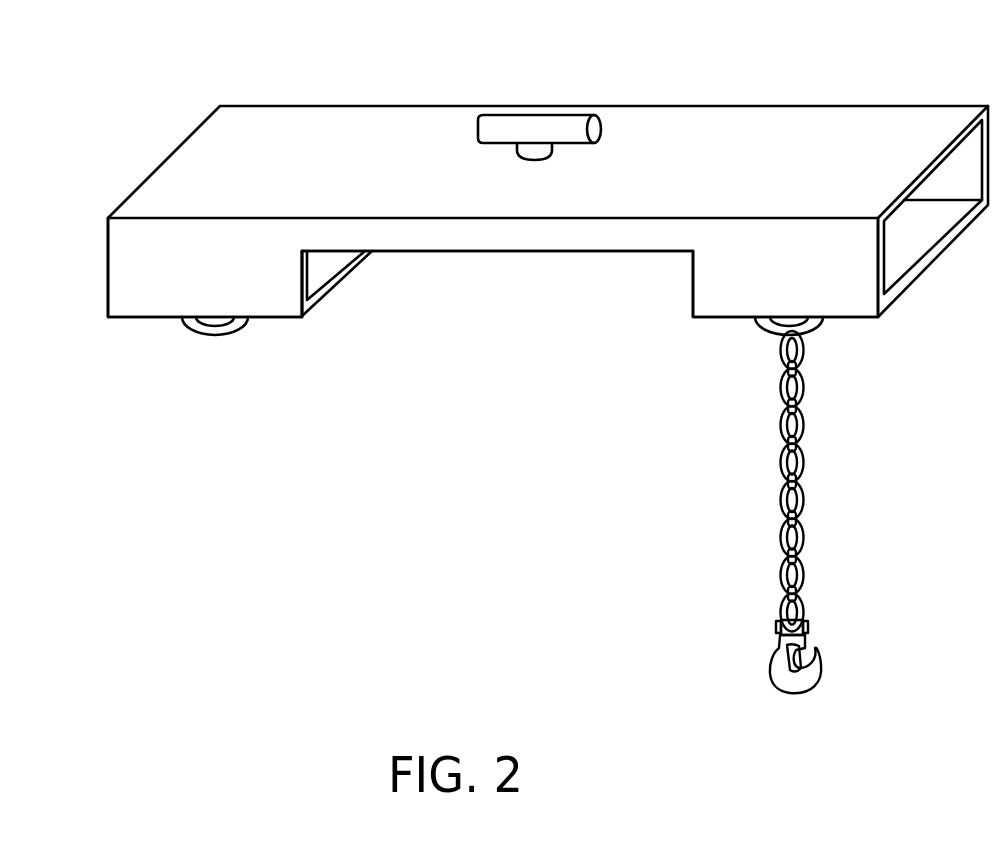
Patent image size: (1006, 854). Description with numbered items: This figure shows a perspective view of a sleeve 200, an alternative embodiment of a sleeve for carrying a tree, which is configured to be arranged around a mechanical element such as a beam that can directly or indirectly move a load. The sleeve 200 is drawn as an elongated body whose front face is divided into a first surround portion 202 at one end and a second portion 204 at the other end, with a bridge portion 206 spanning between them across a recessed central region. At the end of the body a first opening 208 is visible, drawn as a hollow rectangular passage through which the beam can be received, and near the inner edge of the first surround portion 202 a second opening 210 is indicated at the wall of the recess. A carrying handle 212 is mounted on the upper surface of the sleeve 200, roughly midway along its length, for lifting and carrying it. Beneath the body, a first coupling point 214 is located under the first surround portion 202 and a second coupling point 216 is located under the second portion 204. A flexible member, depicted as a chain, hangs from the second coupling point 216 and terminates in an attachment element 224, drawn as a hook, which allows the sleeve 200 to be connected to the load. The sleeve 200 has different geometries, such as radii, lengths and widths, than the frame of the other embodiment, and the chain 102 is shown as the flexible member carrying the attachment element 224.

The sleeve 200 is at (138, 113).
The first surround portion 202 is at (224, 273).
The second portion 204 is at (800, 285).
The bridge portion 206 is at (513, 248).
The first opening 208 is at (940, 241).
The second opening 210 is at (318, 265).
The carrying handle 212 is at (478, 128).
The first coupling point 214 is at (216, 337).
The second coupling point 216 is at (787, 333).
The chain 102 is at (782, 498).
The attachment element 224 is at (795, 693).